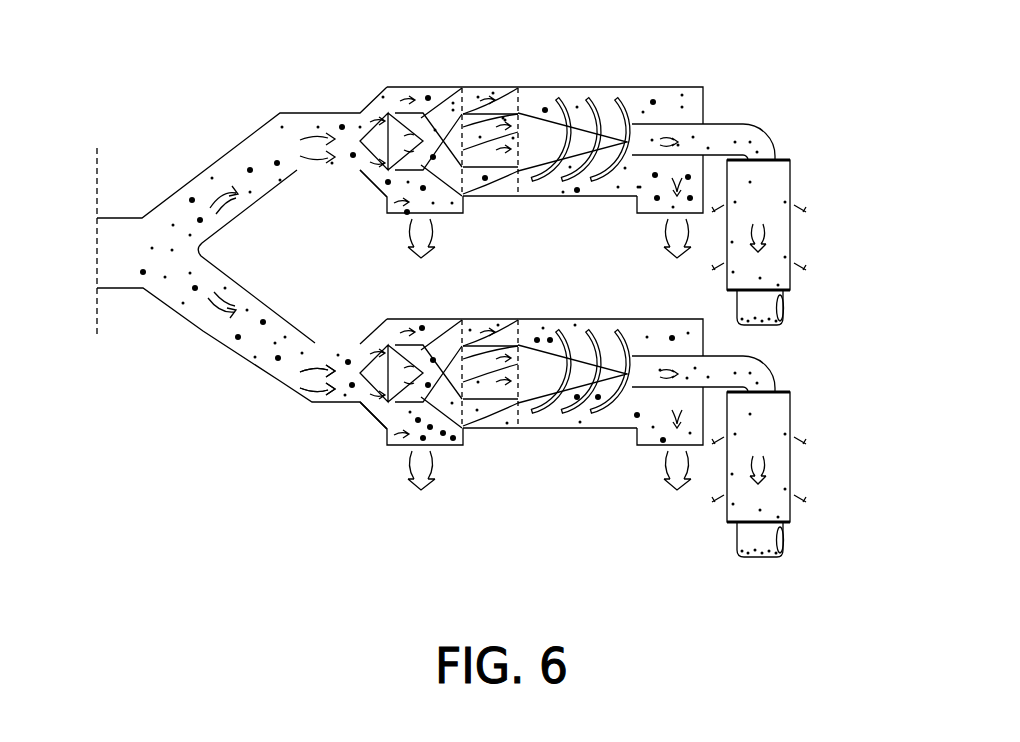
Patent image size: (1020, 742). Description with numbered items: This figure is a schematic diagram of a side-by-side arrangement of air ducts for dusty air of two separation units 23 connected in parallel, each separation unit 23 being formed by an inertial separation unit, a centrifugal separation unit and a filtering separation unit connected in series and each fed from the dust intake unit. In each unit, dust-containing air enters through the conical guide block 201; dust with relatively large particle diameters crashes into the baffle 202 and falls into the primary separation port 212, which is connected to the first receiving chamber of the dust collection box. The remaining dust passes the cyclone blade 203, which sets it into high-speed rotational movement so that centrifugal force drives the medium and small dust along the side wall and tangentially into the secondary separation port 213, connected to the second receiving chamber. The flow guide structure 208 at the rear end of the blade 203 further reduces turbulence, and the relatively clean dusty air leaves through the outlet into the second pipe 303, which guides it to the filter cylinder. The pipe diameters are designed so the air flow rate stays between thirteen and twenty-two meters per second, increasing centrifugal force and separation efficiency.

The conical guide block 201 is at (372, 120).
The baffle 202 is at (452, 95).
The cyclone blade 203 is at (509, 102).
The flow guide structure 208 is at (545, 125).
The primary separation port 212 is at (405, 216).
The secondary separation port 213 is at (656, 215).
The second pipe 303 is at (718, 123).
The separation unit 23 is at (819, 116).